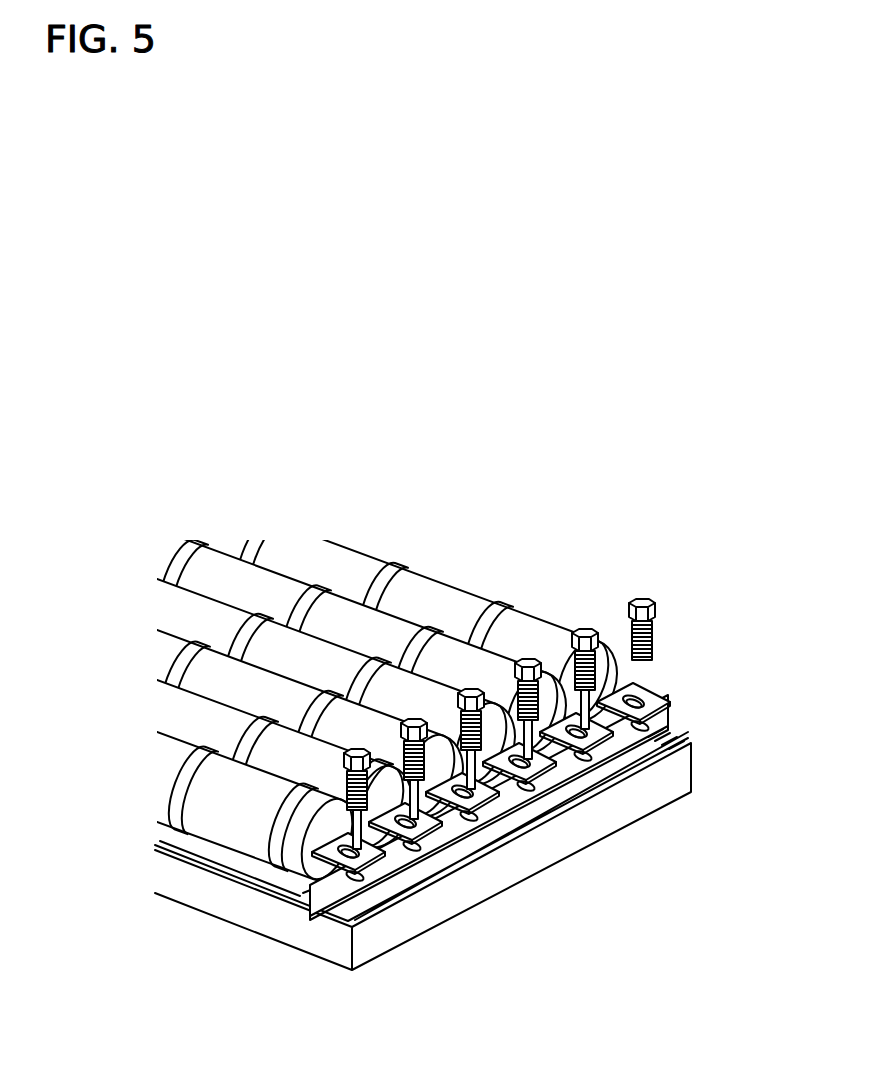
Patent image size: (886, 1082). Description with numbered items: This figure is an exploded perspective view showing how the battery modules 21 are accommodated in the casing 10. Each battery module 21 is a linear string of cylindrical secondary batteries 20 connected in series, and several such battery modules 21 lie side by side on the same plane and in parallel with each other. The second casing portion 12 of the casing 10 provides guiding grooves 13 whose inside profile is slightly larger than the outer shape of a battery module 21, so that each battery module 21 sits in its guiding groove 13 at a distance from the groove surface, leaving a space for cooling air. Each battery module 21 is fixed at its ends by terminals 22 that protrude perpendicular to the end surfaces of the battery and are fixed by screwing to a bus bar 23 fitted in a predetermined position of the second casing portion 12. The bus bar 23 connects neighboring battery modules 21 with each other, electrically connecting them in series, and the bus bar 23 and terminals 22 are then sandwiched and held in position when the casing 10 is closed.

The casing 10 is at (737, 765).
The second casing portion 12 is at (583, 836).
The guiding groove 13 is at (286, 881).
The secondary battery 20 is at (415, 588).
The battery module 21 is at (502, 573).
The terminal 22 is at (655, 697).
The bus bar 23 is at (625, 742).